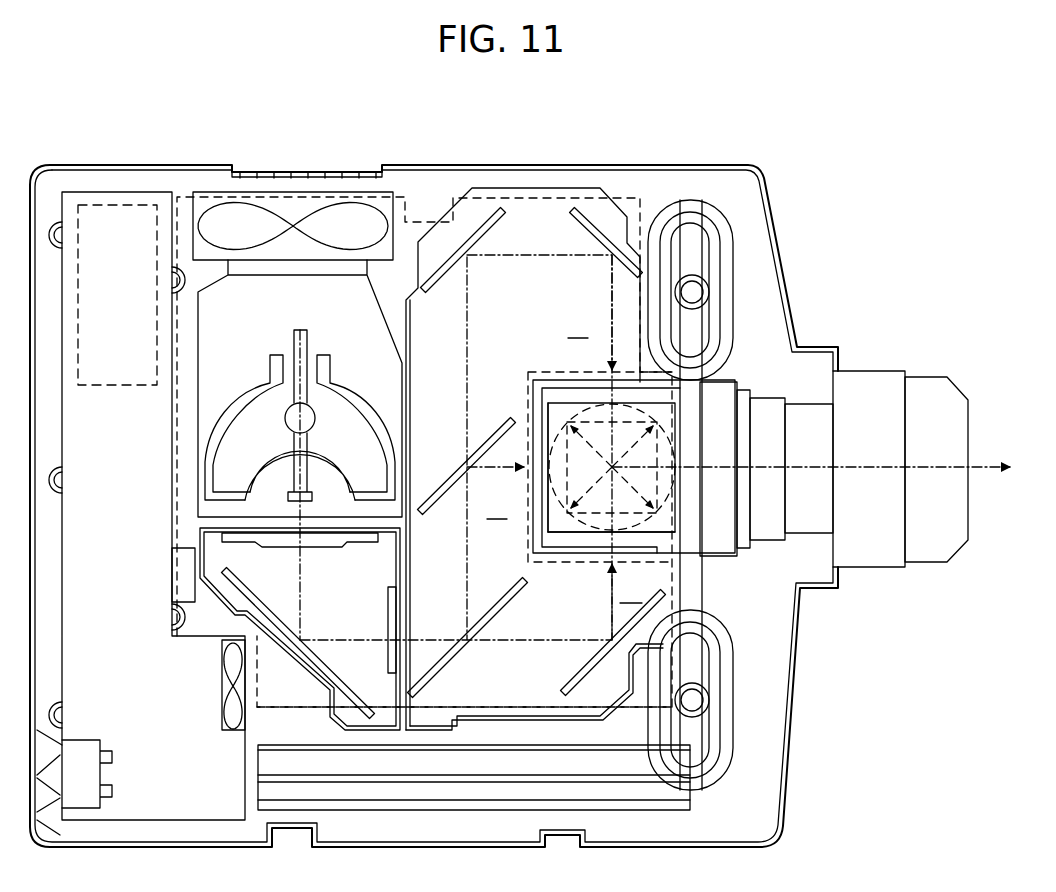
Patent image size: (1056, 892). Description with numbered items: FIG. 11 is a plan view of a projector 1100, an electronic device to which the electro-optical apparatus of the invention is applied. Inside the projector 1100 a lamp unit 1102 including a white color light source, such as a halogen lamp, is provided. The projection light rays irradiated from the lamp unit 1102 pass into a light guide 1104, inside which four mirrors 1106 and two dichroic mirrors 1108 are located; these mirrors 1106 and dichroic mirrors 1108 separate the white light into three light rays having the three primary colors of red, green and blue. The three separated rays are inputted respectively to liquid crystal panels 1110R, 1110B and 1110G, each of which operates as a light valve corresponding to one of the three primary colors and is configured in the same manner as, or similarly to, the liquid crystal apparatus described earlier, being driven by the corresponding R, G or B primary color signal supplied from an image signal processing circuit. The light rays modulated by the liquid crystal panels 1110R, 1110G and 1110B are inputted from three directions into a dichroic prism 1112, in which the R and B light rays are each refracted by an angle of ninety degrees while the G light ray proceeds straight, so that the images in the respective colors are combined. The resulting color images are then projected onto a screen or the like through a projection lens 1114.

The projector 1100 is at (800, 166).
The lamp unit 1102 is at (347, 313).
The light guide 1104 is at (476, 188).
The mirrors 1106 is at (593, 223).
The dichroic mirrors 1108 is at (497, 606).
The liquid crystal panel 1110R is at (575, 382).
The liquid crystal panel 1110G is at (538, 428).
The liquid crystal panel 1110B is at (567, 549).
The dichroic prism 1112 is at (737, 553).
The projection lens 1114 is at (933, 383).